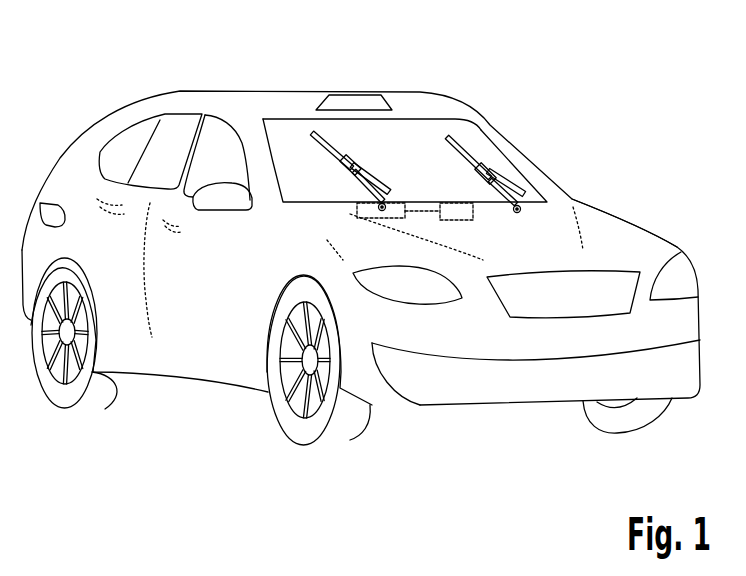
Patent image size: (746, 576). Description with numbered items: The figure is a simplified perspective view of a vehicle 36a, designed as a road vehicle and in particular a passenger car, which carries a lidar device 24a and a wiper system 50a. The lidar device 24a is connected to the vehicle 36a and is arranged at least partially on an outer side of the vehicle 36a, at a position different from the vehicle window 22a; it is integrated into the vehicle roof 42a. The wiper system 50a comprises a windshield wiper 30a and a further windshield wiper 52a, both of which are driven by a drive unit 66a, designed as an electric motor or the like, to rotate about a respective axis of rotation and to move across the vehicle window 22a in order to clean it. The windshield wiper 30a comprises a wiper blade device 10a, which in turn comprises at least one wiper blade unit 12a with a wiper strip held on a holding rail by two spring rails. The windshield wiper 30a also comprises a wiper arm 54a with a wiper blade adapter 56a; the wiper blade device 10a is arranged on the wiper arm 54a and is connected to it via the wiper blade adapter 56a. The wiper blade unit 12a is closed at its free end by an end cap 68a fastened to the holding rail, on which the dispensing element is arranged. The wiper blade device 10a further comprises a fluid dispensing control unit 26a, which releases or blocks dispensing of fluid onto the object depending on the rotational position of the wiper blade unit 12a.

The wiper blade device 10a is at (372, 135).
The wiper blade unit 12a is at (322, 152).
The vehicle window 22a is at (411, 133).
The lidar device 24a is at (338, 108).
The fluid dispensing control unit 26a is at (401, 218).
The windshield wiper 30a is at (301, 135).
The vehicle 36a is at (569, 132).
The vehicle roof 42a is at (437, 110).
The wiper system 50a is at (493, 118).
The further windshield wiper 52a is at (474, 145).
The wiper arm 54a is at (368, 184).
The wiper blade adapter 56a is at (348, 160).
The drive unit 66a is at (473, 218).
The end cap 68a is at (312, 132).